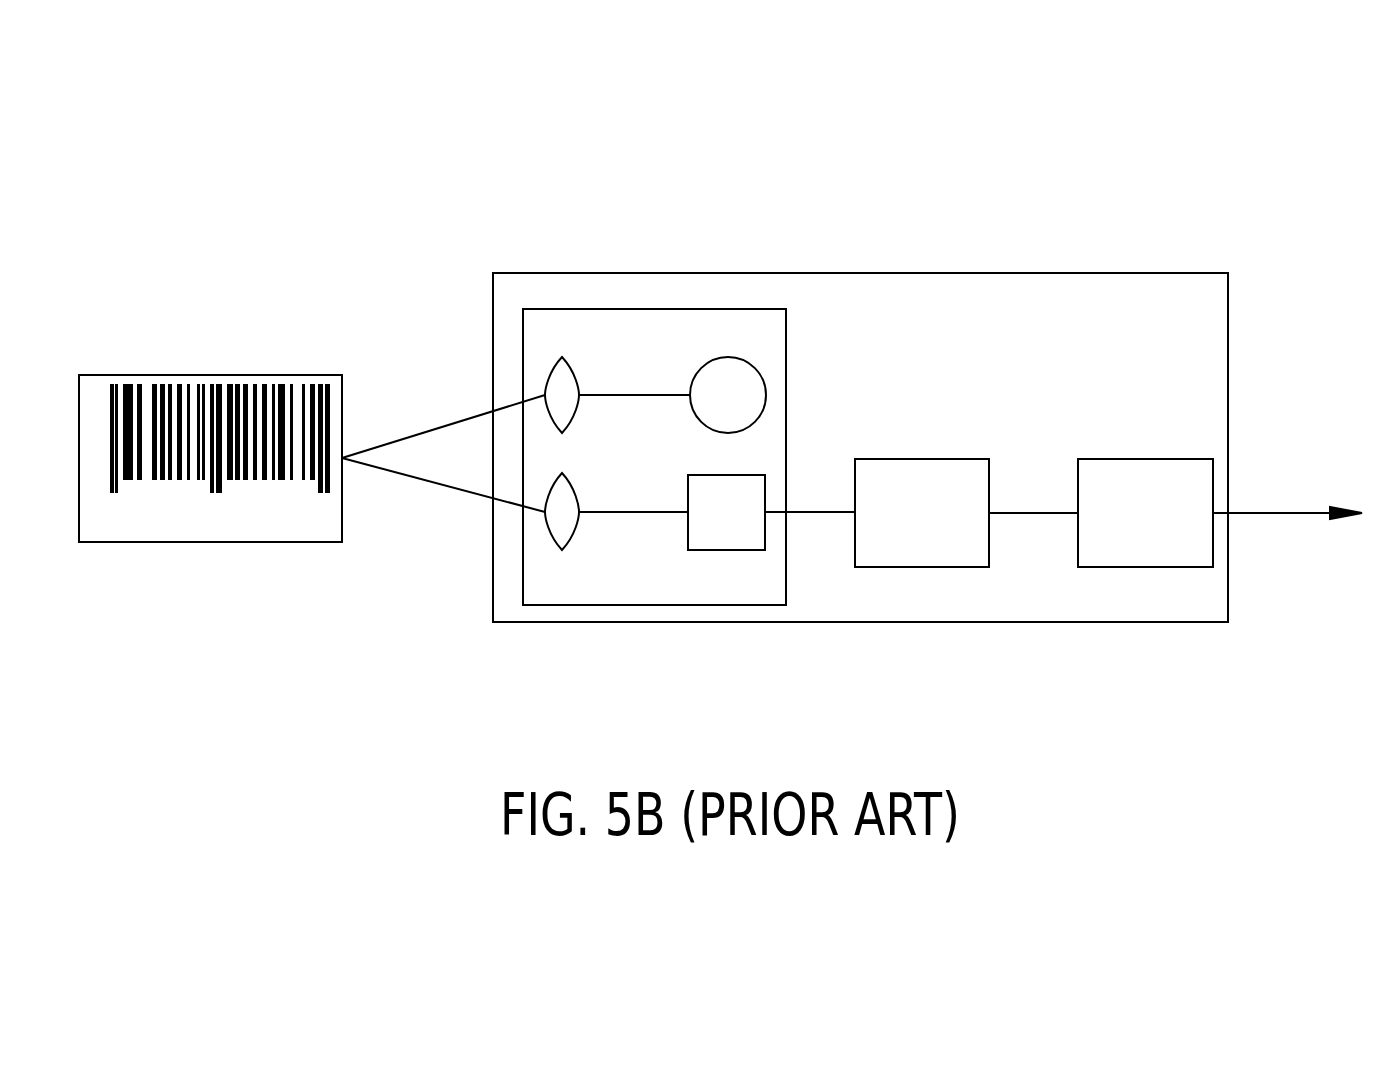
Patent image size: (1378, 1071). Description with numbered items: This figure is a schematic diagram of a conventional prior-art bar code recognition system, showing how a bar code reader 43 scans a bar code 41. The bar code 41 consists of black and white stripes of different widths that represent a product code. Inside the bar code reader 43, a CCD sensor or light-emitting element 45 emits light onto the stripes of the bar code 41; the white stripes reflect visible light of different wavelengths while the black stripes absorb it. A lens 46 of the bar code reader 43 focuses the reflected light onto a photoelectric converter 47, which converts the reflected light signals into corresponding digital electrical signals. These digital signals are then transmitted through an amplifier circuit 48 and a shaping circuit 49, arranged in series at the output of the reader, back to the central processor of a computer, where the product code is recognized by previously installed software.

The bar code 41 is at (226, 375).
The bar code reader 43 is at (655, 223).
The CCD sensor or light-emitting element 45 is at (732, 382).
The lens 46 is at (567, 402).
The photoelectric converter 47 is at (722, 508).
The amplifier circuit 48 is at (900, 568).
The shaping circuit 49 is at (1125, 568).